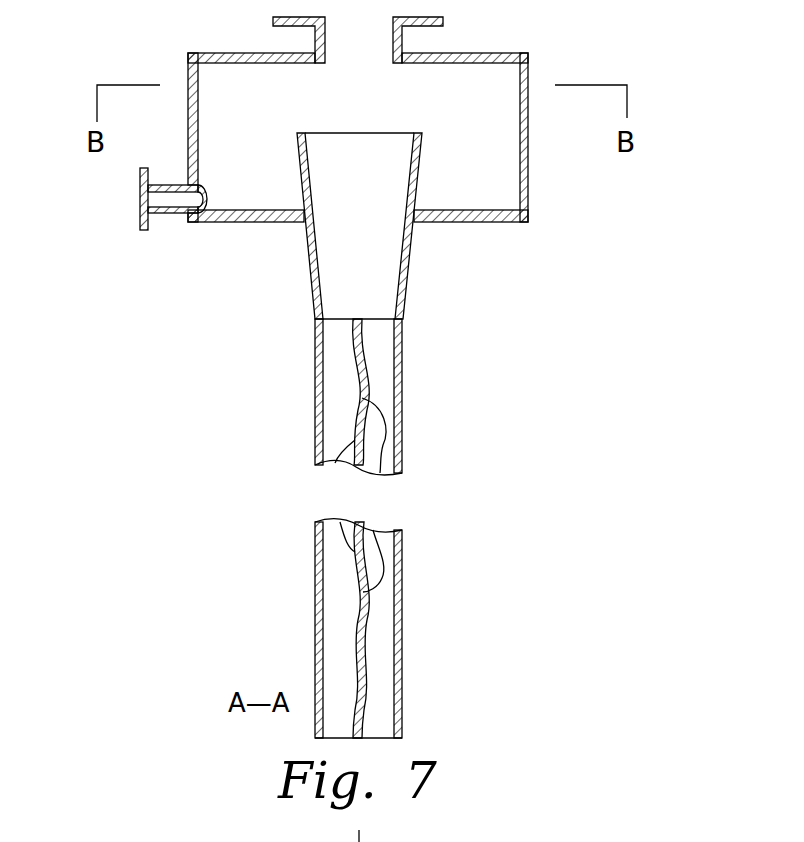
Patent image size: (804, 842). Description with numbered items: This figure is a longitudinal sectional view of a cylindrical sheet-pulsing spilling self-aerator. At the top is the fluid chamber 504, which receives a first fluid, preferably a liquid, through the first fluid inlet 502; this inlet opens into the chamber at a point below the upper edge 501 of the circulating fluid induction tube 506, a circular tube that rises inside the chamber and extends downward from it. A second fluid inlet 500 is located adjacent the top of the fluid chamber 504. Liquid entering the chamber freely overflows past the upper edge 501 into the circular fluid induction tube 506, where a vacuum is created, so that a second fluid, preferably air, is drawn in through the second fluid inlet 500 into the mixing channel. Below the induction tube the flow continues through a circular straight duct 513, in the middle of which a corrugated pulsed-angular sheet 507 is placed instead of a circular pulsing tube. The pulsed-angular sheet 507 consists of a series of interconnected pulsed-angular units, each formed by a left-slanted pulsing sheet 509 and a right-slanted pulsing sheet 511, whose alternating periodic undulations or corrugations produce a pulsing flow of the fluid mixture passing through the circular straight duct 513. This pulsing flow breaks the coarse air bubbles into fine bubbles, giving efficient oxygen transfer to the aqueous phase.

The second fluid inlet 500 is at (313, 42).
The upper edge 501 is at (362, 132).
The first fluid inlet 502 is at (138, 193).
The fluid chamber 504 is at (528, 183).
The circulating fluid induction tube 506 is at (407, 280).
The pulsed-angular sheet 507 is at (340, 362).
The left-slanted pulsing sheet 509 is at (430, 497).
The right-slanted pulsing sheet 511 is at (430, 497).
The circular straight duct 513 is at (402, 668).